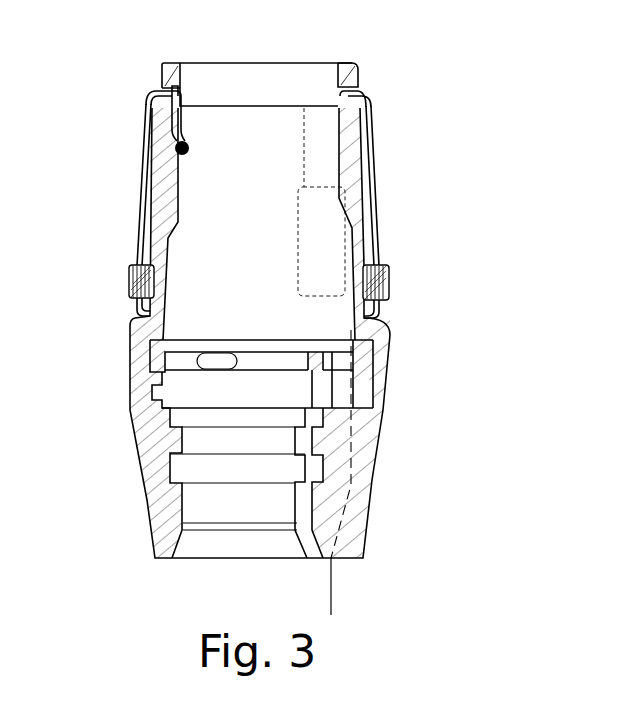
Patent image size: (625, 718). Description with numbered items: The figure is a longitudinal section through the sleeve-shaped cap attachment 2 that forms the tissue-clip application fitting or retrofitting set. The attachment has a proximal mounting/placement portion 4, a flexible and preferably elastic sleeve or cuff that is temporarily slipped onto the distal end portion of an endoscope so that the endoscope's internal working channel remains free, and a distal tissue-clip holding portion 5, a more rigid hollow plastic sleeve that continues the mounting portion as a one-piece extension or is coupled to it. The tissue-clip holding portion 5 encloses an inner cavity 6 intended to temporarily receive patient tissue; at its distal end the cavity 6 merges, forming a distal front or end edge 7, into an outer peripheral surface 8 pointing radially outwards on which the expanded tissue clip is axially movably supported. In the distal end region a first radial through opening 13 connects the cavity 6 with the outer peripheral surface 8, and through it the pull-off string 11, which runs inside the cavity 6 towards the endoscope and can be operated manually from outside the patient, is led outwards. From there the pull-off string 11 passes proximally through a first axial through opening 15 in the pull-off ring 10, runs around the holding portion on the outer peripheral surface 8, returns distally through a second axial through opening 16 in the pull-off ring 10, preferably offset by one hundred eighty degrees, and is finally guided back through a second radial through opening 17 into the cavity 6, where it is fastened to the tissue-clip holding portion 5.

The cap attachment 2 is at (462, 32).
The proximal mounting/placement portion 4 is at (375, 418).
The distal tissue-clip holding portion 5 is at (140, 355).
The cavity 6 is at (242, 118).
The distal front or end edge 7 is at (345, 64).
The outer peripheral surface 8 is at (374, 160).
The pull-off ring 10 is at (388, 282).
The pull-off string 11 is at (146, 130).
The first radial through opening 13 is at (361, 92).
The first axial through opening 15 is at (382, 263).
The second axial through opening 16 is at (131, 276).
The second radial through opening 17 is at (149, 100).